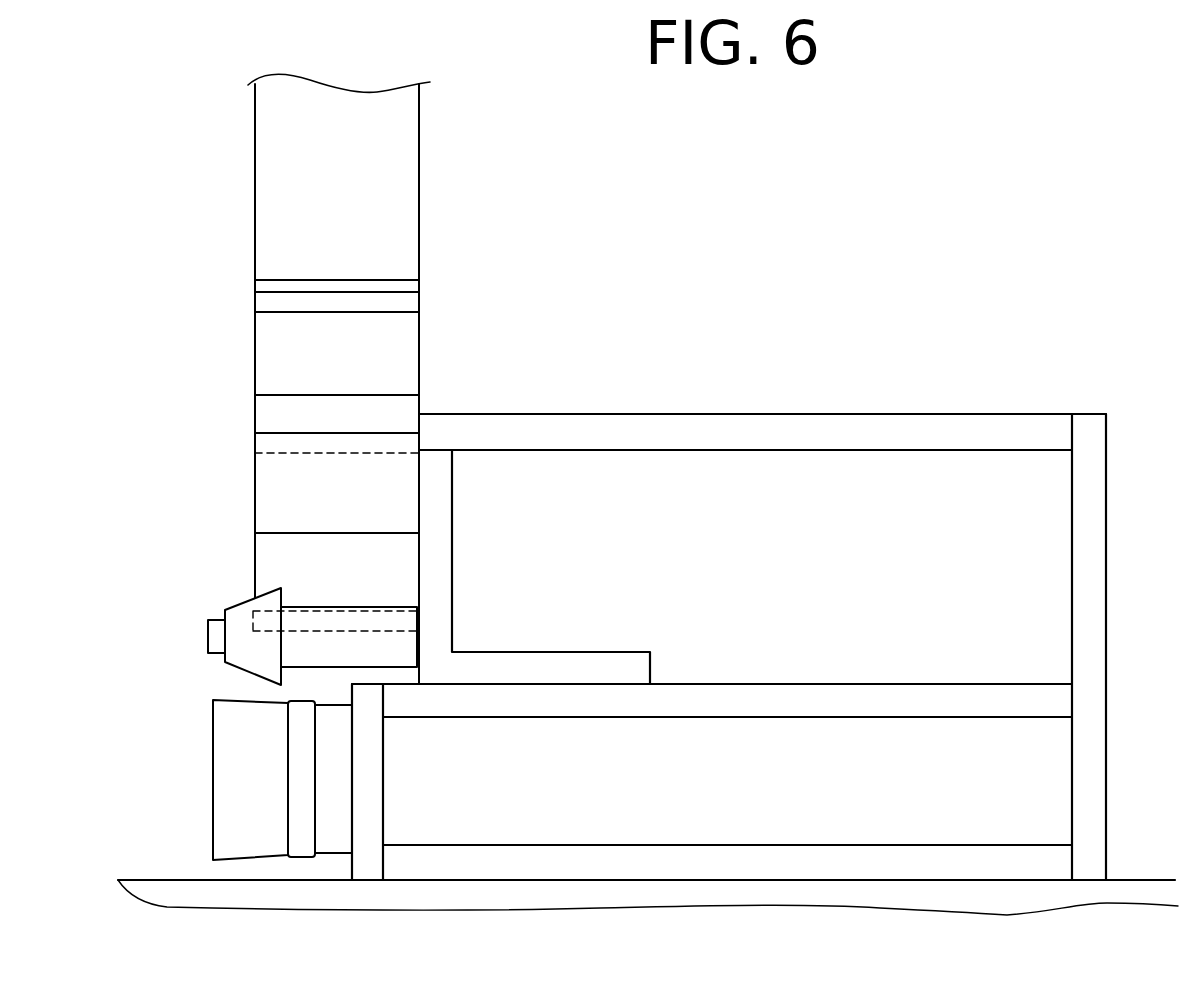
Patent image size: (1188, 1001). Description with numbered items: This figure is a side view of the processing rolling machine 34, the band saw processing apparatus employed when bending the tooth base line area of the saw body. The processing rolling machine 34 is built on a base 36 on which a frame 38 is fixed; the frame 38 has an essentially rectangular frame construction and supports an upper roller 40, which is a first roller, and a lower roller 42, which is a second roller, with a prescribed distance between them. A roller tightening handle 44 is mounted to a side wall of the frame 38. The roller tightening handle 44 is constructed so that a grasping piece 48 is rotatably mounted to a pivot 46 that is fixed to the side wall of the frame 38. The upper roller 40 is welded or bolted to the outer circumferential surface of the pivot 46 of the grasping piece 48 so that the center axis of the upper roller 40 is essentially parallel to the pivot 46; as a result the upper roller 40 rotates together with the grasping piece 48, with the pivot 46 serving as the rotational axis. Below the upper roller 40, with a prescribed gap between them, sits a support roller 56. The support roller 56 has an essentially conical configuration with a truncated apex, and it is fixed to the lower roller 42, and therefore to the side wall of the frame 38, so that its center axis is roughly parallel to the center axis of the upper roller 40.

The processing rolling machine 34 is at (648, 552).
The base 36 is at (838, 898).
The frame 38 is at (724, 432).
The upper roller 40 is at (250, 665).
The lower roller 42 is at (234, 780).
The roller tightening handle 44 is at (228, 256).
The pivot 46 is at (312, 510).
The grasping piece 48 is at (393, 258).
The support roller 56 is at (250, 818).